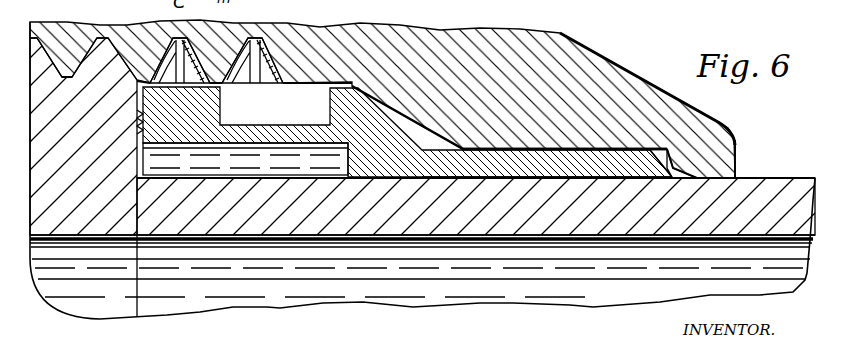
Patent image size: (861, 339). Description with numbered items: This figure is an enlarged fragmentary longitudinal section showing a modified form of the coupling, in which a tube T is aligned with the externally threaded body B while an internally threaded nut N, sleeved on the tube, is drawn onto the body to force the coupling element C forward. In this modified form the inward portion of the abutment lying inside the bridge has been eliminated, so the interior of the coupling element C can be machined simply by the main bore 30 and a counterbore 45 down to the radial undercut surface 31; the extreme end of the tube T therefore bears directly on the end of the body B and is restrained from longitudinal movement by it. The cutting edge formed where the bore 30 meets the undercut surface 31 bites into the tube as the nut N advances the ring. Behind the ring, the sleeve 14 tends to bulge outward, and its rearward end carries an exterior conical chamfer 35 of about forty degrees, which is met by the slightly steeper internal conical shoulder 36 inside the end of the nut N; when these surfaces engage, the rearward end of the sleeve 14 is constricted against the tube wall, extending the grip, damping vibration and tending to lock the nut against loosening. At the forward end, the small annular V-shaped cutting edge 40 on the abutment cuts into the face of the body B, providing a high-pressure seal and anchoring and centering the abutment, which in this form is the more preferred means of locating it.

The nut N is at (585, 83).
The coupling element C is at (363, 117).
The internal conical shoulder 36 is at (683, 163).
The body B is at (93, 207).
The bore 30 is at (380, 180).
The tube T is at (447, 213).
The radial undercut surface 31 is at (347, 152).
The sleeve 14 is at (578, 157).
The exterior conical chamfer 35 is at (660, 172).
The counterbore 45 is at (211, 152).
The annular V-shaped cutting edge 40 is at (137, 128).